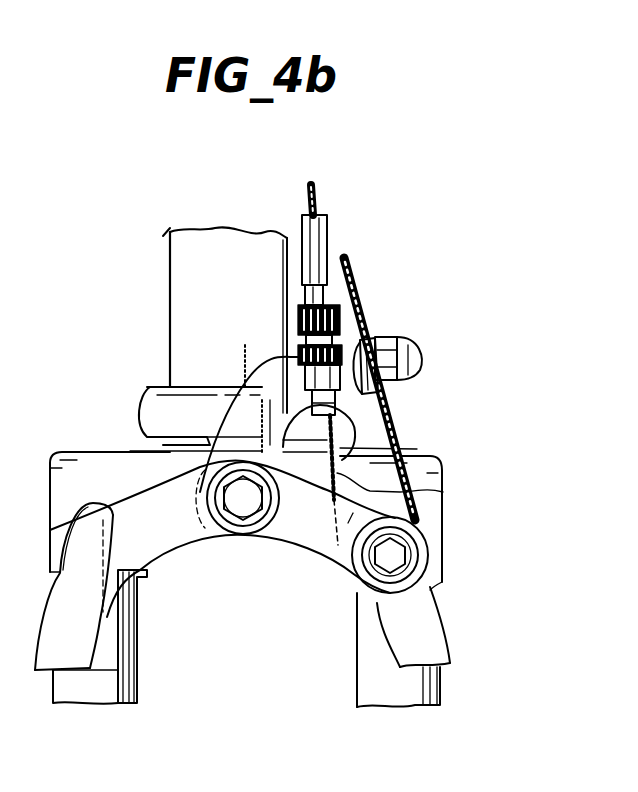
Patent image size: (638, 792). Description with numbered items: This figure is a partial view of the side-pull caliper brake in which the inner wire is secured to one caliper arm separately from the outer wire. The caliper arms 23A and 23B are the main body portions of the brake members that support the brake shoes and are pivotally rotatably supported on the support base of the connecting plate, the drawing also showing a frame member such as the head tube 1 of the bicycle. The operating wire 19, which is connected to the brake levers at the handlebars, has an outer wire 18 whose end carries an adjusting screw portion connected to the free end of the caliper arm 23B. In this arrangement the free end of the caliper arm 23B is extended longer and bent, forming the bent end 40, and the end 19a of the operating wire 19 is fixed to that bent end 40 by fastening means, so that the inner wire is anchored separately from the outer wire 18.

The head tube 1 is at (183, 246).
The outer wire 18 is at (323, 233).
The bent end 40 is at (368, 340).
The caliper arm 23B is at (247, 413).
The end of the operating wire 19a is at (385, 400).
The operating wire 19 is at (400, 492).
The caliper arm 23A is at (73, 645).